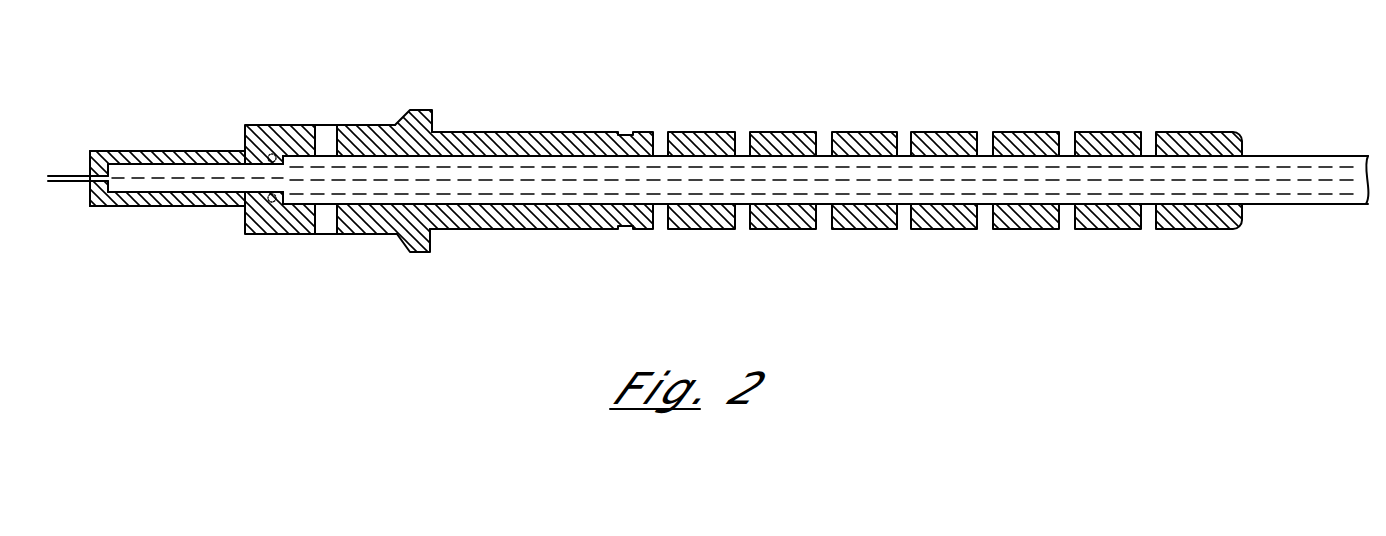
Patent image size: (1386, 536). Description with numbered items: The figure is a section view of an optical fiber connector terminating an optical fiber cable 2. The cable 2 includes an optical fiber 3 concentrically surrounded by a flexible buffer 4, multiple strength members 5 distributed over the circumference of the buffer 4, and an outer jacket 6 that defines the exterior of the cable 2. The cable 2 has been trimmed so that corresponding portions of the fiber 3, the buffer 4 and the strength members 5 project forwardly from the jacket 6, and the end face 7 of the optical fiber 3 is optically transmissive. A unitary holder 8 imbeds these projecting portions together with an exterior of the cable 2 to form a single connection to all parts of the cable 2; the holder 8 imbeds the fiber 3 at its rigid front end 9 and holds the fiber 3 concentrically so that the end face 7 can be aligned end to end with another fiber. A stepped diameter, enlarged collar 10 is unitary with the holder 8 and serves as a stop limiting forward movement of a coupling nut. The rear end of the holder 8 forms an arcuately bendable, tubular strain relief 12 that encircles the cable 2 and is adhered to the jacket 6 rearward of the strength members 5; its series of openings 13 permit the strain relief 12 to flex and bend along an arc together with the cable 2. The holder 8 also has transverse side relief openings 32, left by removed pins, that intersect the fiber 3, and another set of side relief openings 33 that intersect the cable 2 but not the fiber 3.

The optical fiber cable 2 is at (1292, 204).
The optical fiber 3 is at (83, 176).
The flexible buffer 4 is at (172, 188).
The strength members 5 is at (272, 154).
The outer jacket 6 is at (278, 192).
The end face 7 is at (46, 177).
The holder 8 is at (543, 133).
The front end 9 is at (90, 195).
The enlarged collar 10 is at (420, 110).
The strain relief 12 is at (862, 133).
The openings 13 is at (738, 155).
The side relief openings 32 is at (133, 151).
The side relief openings 33 is at (332, 151).